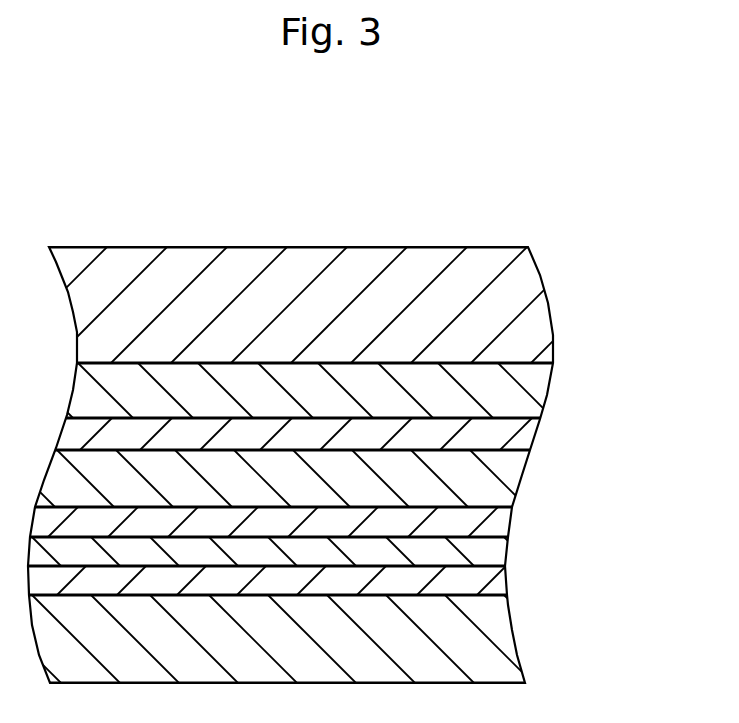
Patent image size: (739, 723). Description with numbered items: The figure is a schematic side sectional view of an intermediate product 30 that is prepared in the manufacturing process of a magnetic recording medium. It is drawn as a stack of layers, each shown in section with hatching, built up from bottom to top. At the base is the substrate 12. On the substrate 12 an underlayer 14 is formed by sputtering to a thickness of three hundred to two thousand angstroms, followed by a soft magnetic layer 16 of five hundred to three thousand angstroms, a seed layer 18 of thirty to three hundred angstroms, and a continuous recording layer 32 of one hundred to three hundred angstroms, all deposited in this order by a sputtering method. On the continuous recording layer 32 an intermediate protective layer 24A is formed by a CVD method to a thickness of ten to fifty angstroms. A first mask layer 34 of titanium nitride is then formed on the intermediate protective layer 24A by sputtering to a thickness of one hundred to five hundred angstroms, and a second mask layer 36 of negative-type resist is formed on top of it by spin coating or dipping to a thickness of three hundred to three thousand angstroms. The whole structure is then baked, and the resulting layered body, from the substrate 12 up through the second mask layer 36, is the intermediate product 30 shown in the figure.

The intermediate product 30 is at (252, 167).
The second mask layer 36 is at (552, 306).
The first mask layer 34 is at (549, 385).
The intermediate protective layer 24A is at (535, 436).
The continuous recording layer 32 is at (518, 485).
The seed layer 18 is at (511, 525).
The soft magnetic layer 16 is at (507, 555).
The underlayer 14 is at (507, 581).
The substrate 12 is at (513, 635).